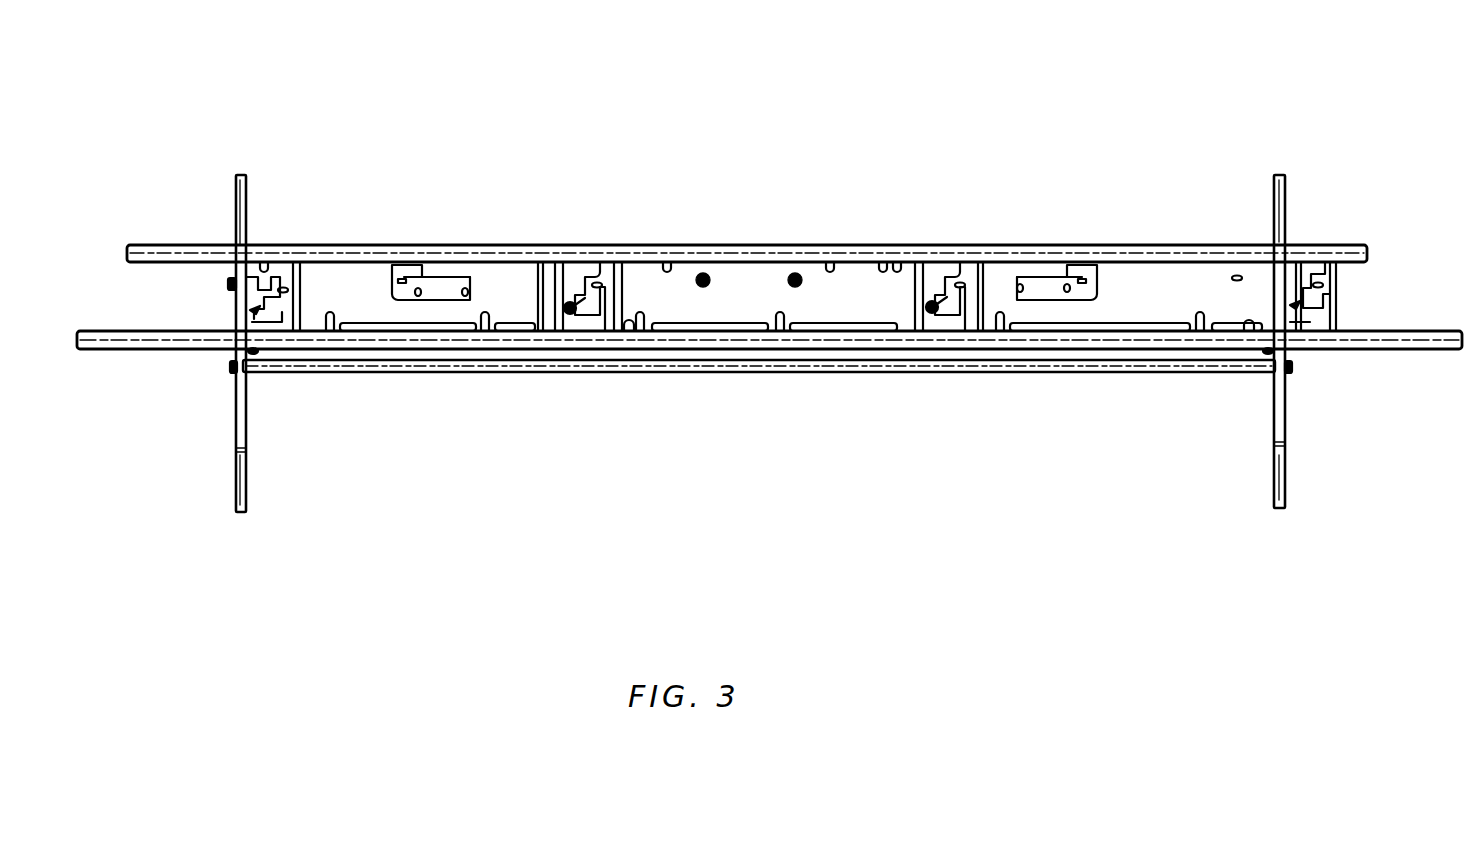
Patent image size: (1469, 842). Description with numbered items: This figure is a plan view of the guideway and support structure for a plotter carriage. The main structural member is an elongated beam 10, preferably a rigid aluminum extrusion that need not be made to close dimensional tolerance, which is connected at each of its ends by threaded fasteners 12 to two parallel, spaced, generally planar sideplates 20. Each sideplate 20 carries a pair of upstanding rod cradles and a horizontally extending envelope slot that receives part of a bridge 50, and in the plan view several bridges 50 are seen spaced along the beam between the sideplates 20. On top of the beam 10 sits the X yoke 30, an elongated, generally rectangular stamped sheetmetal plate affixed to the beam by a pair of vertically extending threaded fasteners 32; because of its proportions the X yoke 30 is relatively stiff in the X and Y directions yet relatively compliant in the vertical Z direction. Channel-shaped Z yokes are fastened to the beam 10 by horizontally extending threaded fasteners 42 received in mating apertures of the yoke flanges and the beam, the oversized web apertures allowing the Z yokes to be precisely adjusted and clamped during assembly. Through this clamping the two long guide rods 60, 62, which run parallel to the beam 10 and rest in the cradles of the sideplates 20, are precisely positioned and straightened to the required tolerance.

The elongated beam 10 is at (364, 94).
The threaded fasteners 12 is at (229, 367).
The sideplates 20 is at (247, 479).
The X yoke 30 is at (842, 292).
The threaded fasteners 32 is at (795, 274).
The threaded fasteners 42 is at (565, 352).
The bridge 50 is at (308, 295).
The rod 60 is at (480, 350).
The rod 62 is at (497, 244).